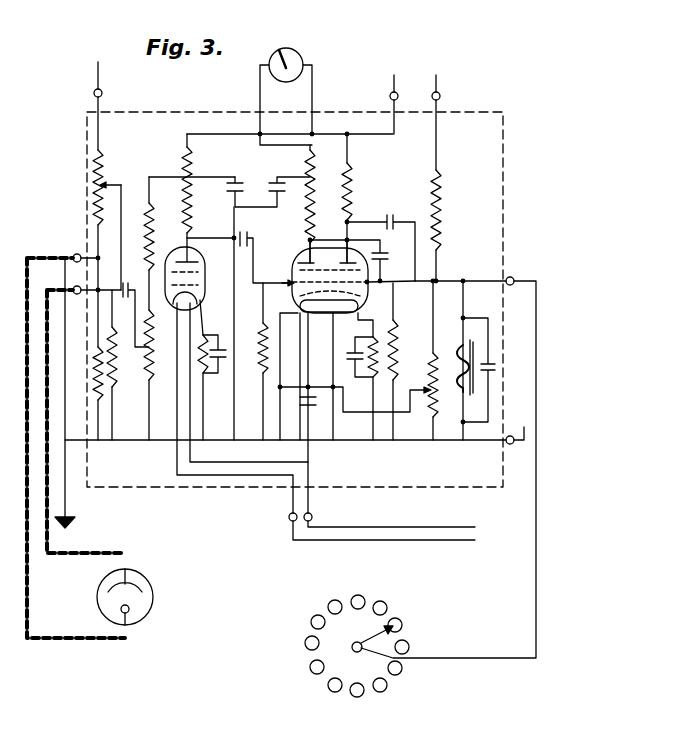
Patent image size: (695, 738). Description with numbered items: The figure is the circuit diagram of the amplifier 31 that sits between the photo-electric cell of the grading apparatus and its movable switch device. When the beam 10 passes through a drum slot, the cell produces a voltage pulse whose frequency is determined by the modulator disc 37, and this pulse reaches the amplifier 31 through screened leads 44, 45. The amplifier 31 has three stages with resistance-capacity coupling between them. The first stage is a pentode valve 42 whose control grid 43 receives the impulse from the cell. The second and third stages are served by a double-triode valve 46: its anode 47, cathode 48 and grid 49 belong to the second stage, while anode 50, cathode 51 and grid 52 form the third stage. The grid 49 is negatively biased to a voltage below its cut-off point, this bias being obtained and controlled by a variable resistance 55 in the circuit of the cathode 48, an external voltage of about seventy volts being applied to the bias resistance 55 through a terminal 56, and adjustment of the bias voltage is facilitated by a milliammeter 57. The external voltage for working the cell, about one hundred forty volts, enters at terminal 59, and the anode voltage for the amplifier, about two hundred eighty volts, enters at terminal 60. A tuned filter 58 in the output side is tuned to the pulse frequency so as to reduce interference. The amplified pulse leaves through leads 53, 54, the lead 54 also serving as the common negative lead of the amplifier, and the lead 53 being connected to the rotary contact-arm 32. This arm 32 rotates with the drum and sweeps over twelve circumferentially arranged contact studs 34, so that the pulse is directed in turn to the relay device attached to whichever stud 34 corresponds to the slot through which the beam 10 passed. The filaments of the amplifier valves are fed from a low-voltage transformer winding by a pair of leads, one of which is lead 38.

The beam 10 is at (140, 601).
The amplifier 31 is at (206, 113).
The rotary contact-arm 32 is at (370, 634).
The contact studs 34 is at (328, 685).
The modulator disc 37 is at (397, 527).
The output lead 38 is at (412, 540).
The pentode valve 42 is at (200, 254).
The control grid 43 is at (163, 275).
The screened lead 44 is at (91, 554).
The screened lead 45 is at (30, 598).
The double-triode valve 46 is at (297, 246).
The anode 47 is at (296, 262).
The cathode 48 is at (352, 292).
The grid 49 is at (288, 281).
The anode 50 is at (372, 282).
The cathode 51 is at (360, 307).
The grid 52 is at (348, 282).
The lead 53 is at (536, 570).
The lead 54 is at (517, 427).
The variable resistance 55 is at (428, 393).
The terminal 56 is at (440, 92).
The milliammeter 57 is at (301, 62).
The tuned filter 58 is at (94, 92).
The terminal 59 is at (482, 339).
The terminal 60 is at (398, 92).